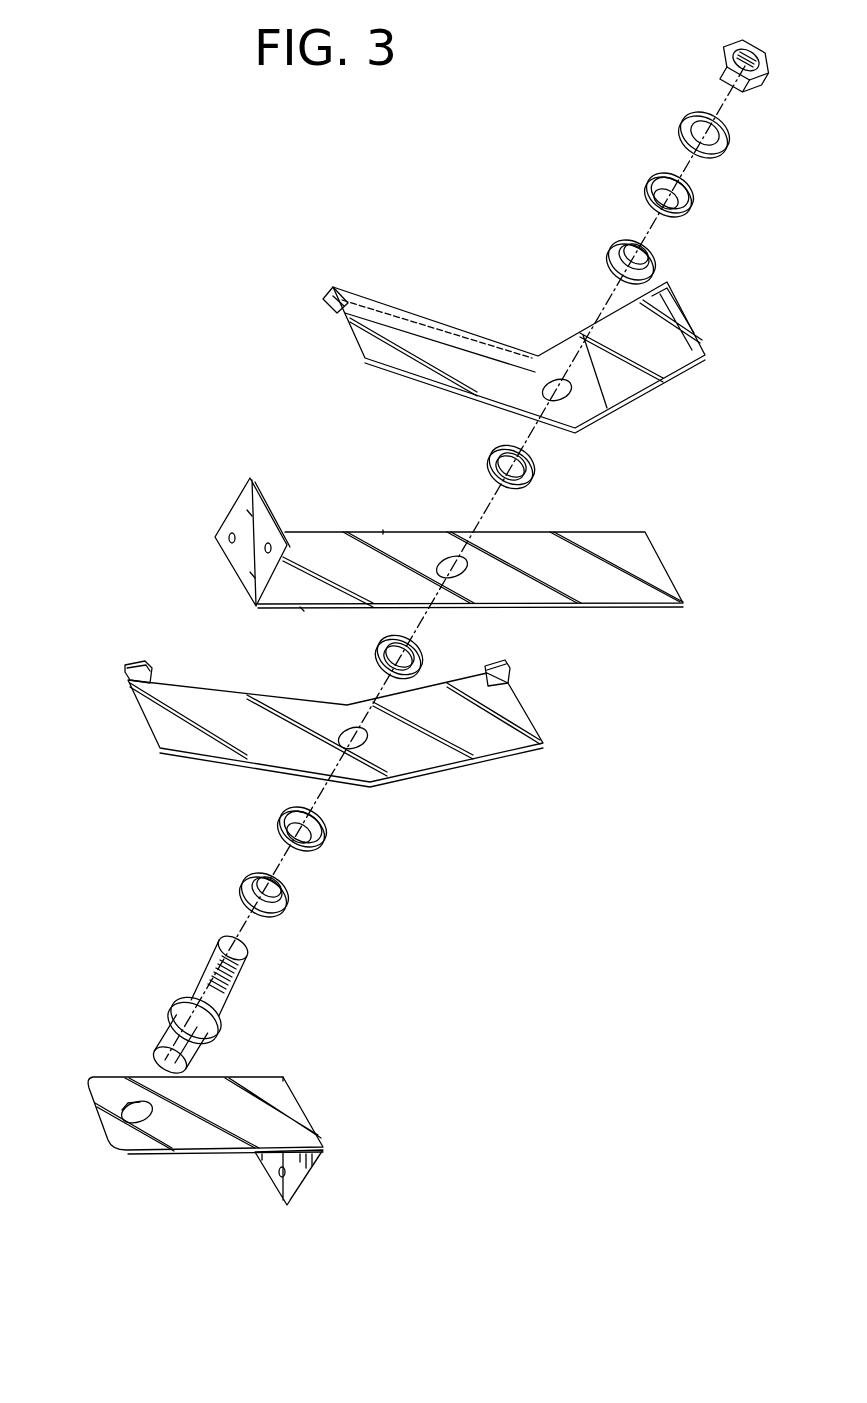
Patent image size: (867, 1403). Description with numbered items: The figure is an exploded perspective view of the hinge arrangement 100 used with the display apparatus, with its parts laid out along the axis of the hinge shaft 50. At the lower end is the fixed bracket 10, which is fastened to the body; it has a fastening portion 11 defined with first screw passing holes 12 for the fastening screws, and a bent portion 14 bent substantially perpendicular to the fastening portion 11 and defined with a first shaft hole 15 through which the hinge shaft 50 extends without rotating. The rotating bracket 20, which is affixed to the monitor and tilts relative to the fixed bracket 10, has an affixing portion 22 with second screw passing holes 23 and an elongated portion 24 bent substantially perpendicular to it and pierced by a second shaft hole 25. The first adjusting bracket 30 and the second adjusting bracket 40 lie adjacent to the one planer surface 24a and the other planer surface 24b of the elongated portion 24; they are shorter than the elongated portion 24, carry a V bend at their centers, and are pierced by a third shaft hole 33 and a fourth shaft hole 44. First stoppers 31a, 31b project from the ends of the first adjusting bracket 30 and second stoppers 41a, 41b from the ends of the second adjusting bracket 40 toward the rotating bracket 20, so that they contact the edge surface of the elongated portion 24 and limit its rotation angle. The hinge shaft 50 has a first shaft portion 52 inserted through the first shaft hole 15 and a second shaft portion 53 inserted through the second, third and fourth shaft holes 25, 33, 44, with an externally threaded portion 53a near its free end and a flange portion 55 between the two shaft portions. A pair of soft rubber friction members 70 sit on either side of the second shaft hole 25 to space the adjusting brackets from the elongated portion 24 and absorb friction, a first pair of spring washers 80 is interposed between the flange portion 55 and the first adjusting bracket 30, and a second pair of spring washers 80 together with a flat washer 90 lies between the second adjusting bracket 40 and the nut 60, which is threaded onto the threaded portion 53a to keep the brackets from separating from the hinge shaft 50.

The hinge arrangement 100 is at (148, 308).
The fixed bracket 10 is at (205, 1143).
The fastening portion 11 is at (290, 1208).
The first screw passing holes 12 is at (280, 1178).
The bent portion 14 is at (183, 1157).
The first shaft hole 15 is at (128, 1104).
The rotating bracket 20 is at (417, 558).
The affixing portion 22 is at (272, 505).
The second screw passing holes 23 is at (248, 512).
The elongated portion 24 is at (342, 526).
The one planer surface 24a is at (300, 611).
The other planer surface 24b is at (383, 530).
The second shaft hole 25 is at (446, 558).
The first adjusting bracket 30 is at (318, 725).
The first stopper 31a is at (130, 662).
The first stopper 31b is at (513, 679).
The third shaft hole 33 is at (348, 730).
The second adjusting bracket 40 is at (513, 336).
The second stopper 41a is at (326, 296).
The second stopper 41b is at (706, 308).
The fourth shaft hole 44 is at (556, 386).
The hinge shaft 50 is at (168, 983).
The first shaft portion 52 is at (162, 1040).
The second shaft portion 53 is at (195, 952).
The externally threaded portion 53a is at (210, 958).
The flange portion 55 is at (172, 1010).
The nut 60 is at (720, 62).
The friction members 70 is at (536, 468).
The spring washers 80 is at (630, 238).
The flat washer 90 is at (690, 120).